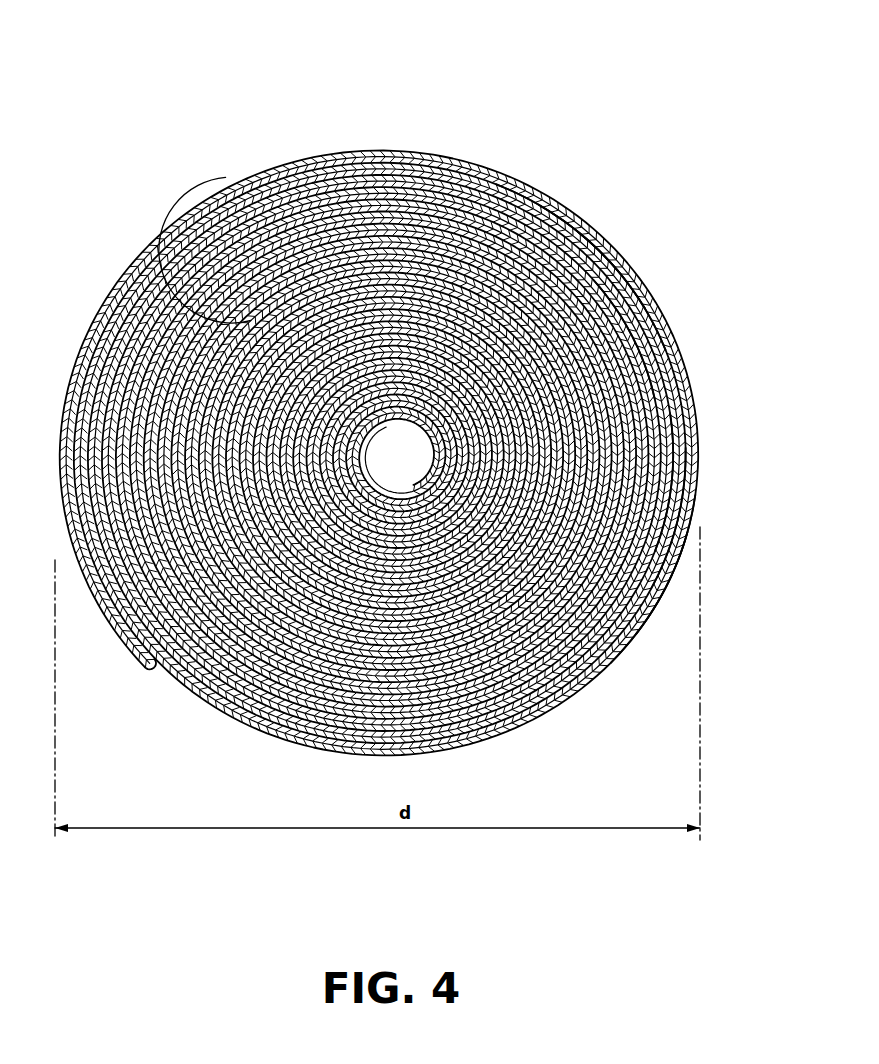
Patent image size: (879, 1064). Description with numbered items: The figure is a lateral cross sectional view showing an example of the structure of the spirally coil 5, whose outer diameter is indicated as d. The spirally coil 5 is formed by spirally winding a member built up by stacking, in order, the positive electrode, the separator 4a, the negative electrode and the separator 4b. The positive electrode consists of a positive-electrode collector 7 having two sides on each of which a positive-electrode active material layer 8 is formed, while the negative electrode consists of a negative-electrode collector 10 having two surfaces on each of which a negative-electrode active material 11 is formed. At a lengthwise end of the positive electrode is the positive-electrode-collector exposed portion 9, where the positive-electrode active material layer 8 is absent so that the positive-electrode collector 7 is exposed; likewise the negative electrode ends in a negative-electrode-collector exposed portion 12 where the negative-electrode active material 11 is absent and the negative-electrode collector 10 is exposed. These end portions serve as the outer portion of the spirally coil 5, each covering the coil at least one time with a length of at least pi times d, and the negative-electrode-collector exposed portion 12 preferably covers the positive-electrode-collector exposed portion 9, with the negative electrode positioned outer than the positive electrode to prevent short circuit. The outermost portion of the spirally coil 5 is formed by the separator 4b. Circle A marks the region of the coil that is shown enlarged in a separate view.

The spirally coil 5 is at (514, 106).
The circle A is at (179, 178).
The positive-electrode collector 7 is at (563, 215).
The positive-electrode active material layer 8 is at (601, 250).
The negative-electrode collector 10 is at (627, 284).
The negative-electrode active material 11 is at (631, 333).
The positive-electrode-collector exposed portion 9 is at (677, 483).
The separator 4a is at (679, 520).
The negative-electrode-collector exposed portion 12 is at (679, 572).
The separator 4b is at (667, 611).